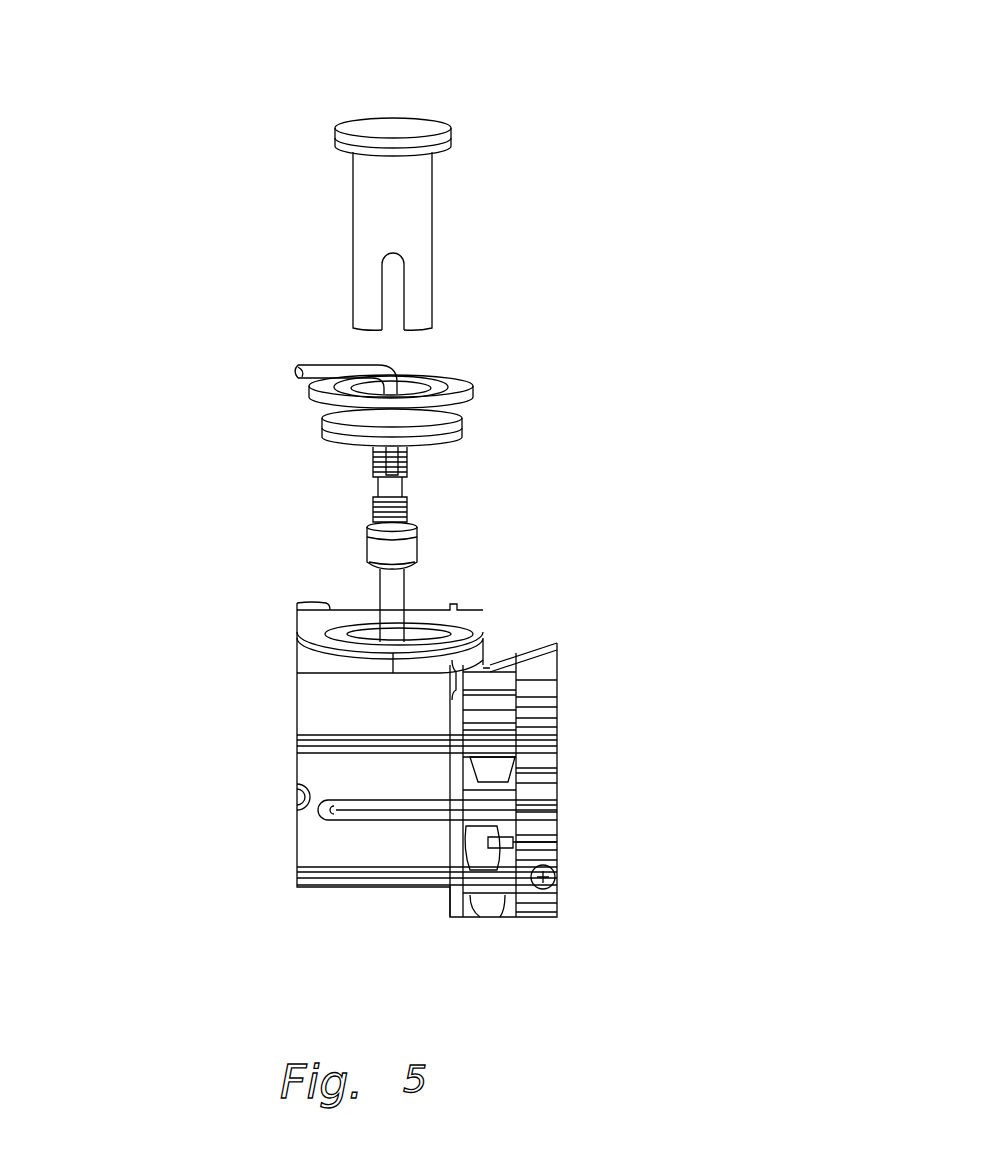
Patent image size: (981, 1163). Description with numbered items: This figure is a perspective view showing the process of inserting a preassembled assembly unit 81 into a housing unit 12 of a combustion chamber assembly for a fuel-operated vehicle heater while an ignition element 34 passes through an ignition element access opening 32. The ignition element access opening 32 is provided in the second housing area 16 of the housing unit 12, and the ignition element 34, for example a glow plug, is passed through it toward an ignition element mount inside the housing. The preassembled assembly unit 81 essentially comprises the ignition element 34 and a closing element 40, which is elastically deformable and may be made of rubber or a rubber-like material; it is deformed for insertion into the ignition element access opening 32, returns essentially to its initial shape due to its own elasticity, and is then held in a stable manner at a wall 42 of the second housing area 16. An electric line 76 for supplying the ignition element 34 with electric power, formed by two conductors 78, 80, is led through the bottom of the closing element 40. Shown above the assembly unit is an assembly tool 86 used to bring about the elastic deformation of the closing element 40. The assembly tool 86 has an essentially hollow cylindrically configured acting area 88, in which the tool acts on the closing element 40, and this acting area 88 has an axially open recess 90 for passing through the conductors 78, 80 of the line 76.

The housing unit 12 is at (452, 745).
The second housing area 16 is at (364, 745).
The ignition element access opening 32 is at (435, 635).
The ignition element 34 is at (418, 550).
The closing element 40 is at (462, 380).
The wall 42 is at (318, 630).
The electric line 76 is at (252, 364).
The conductor 78 is at (297, 384).
The conductor 80 is at (301, 363).
The preassembled assembly unit 81 is at (512, 438).
The assembly tool 86 is at (405, 115).
The acting area 88 is at (432, 208).
The axially open recess 90 is at (396, 278).